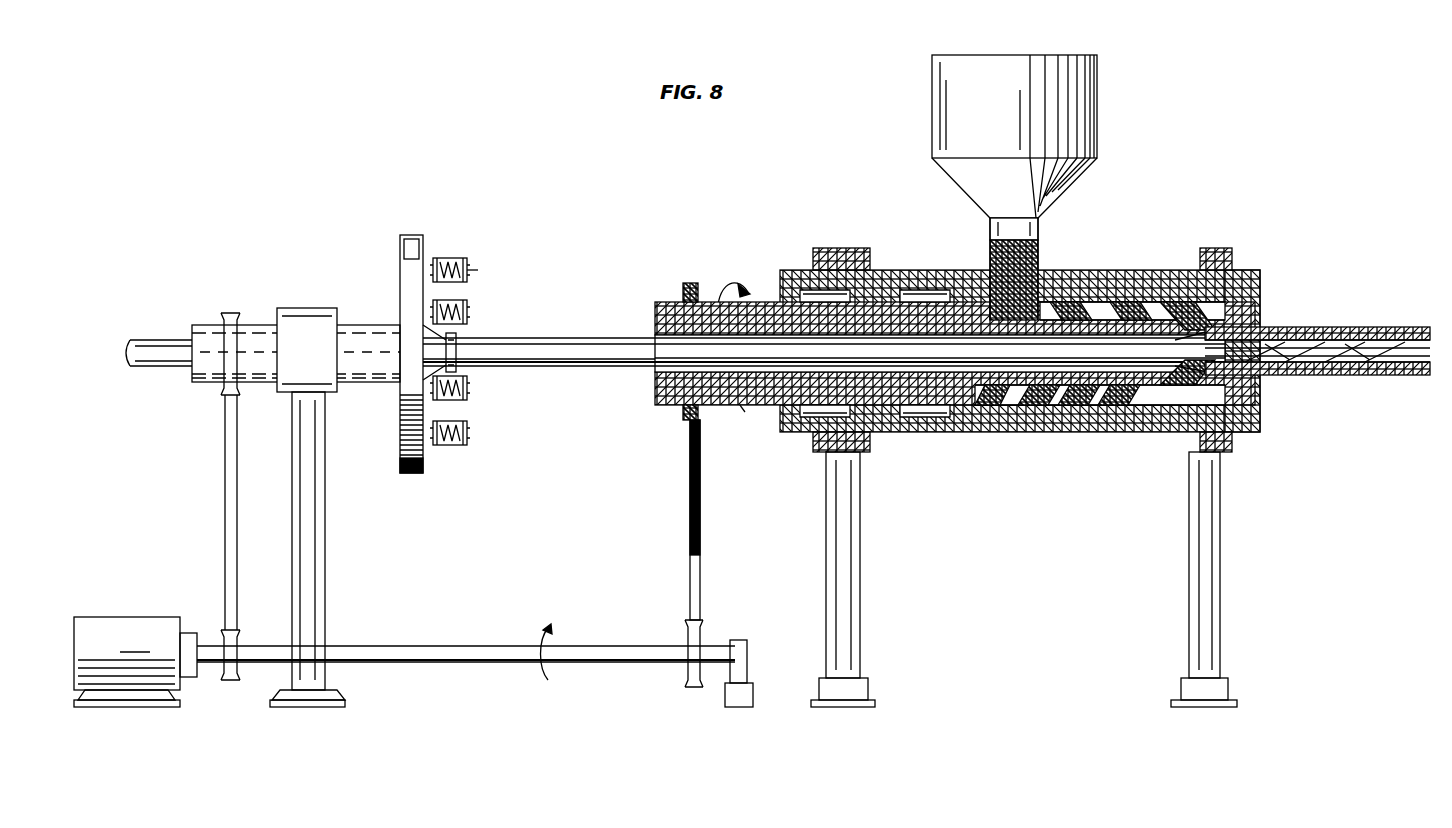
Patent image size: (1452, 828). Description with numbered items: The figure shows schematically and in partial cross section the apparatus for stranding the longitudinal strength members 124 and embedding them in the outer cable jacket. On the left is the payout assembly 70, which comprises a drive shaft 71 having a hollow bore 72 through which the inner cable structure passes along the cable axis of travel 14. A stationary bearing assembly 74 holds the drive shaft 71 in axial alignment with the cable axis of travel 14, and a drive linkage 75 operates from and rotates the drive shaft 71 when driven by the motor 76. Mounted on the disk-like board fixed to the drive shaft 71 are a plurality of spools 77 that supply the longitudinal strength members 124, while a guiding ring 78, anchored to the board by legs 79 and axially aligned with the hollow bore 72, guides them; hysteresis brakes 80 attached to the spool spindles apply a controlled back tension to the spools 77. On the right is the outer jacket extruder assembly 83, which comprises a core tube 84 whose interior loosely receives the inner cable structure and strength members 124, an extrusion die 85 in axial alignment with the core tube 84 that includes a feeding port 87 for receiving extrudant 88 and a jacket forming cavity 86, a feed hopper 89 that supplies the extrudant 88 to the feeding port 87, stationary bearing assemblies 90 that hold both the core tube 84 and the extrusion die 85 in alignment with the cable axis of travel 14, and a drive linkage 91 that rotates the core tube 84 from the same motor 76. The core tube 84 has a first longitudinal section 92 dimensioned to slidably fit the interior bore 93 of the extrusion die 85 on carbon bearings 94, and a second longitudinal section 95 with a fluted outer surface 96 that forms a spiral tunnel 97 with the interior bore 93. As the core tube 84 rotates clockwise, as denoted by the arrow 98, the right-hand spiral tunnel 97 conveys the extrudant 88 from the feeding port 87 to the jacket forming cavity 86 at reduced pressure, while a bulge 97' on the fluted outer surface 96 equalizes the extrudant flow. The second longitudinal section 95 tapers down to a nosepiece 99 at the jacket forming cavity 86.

The cable axis of travel 14 is at (72, 352).
The payout assembly 70 is at (409, 245).
The drive shaft 71 is at (357, 325).
The hollow bore 72 is at (372, 335).
The stationary bearing assembly 74 is at (318, 553).
The drive linkage 75 is at (225, 545).
The motor 76 is at (130, 617).
The spools 77 is at (442, 258).
The guiding ring 78 is at (453, 345).
The legs 79 is at (405, 388).
The hysteresis brakes 80 is at (470, 268).
The outer jacket extruder assembly 83 is at (1153, 158).
The core tube 84 is at (880, 395).
The extrusion die 85 is at (1248, 270).
The jacket forming cavity 86 is at (1195, 400).
The feeding port 87 is at (1040, 268).
The extrudant 88 is at (1112, 300).
The feed hopper 89 is at (1085, 120).
The stationary bearing assemblies 90 is at (858, 600).
The drive linkage 91 is at (690, 540).
The first longitudinal section 92 is at (653, 385).
The interior bore 93 is at (995, 408).
The carbon bearings 94 is at (808, 280).
The second longitudinal section 95 is at (1030, 405).
The fluted outer surface 96 is at (1075, 300).
The spiral tunnel 97 is at (1136, 384).
The bulge 97' is at (1128, 353).
The arrow 98 is at (738, 272).
The nosepiece 99 is at (1220, 325).
The longitudinal strength members 124 is at (525, 348).